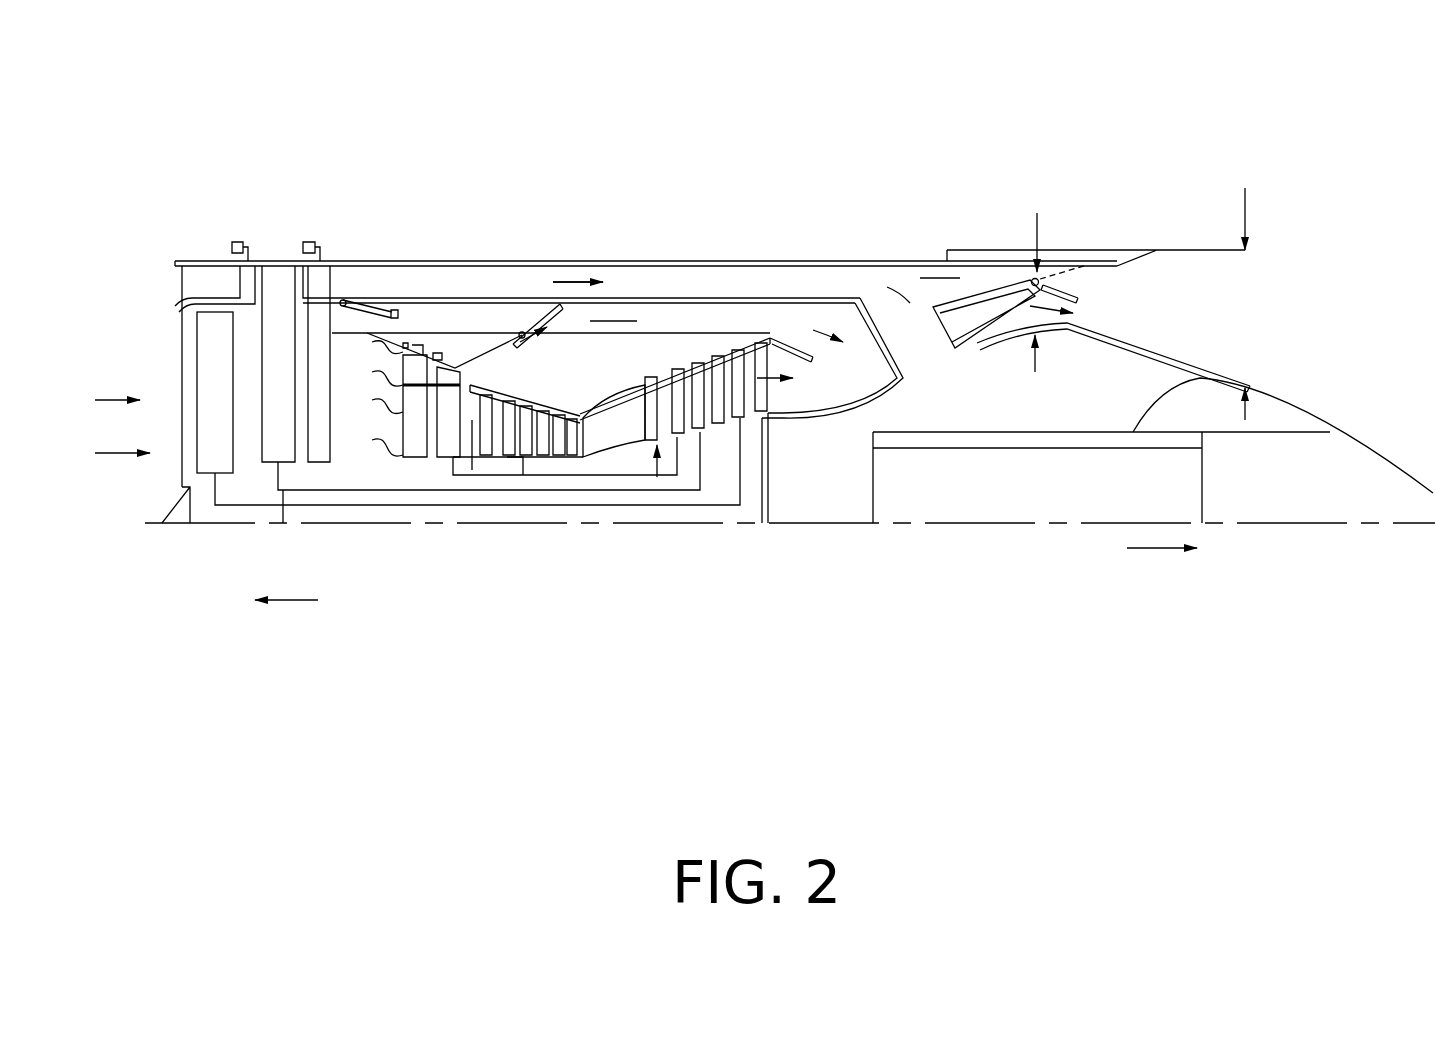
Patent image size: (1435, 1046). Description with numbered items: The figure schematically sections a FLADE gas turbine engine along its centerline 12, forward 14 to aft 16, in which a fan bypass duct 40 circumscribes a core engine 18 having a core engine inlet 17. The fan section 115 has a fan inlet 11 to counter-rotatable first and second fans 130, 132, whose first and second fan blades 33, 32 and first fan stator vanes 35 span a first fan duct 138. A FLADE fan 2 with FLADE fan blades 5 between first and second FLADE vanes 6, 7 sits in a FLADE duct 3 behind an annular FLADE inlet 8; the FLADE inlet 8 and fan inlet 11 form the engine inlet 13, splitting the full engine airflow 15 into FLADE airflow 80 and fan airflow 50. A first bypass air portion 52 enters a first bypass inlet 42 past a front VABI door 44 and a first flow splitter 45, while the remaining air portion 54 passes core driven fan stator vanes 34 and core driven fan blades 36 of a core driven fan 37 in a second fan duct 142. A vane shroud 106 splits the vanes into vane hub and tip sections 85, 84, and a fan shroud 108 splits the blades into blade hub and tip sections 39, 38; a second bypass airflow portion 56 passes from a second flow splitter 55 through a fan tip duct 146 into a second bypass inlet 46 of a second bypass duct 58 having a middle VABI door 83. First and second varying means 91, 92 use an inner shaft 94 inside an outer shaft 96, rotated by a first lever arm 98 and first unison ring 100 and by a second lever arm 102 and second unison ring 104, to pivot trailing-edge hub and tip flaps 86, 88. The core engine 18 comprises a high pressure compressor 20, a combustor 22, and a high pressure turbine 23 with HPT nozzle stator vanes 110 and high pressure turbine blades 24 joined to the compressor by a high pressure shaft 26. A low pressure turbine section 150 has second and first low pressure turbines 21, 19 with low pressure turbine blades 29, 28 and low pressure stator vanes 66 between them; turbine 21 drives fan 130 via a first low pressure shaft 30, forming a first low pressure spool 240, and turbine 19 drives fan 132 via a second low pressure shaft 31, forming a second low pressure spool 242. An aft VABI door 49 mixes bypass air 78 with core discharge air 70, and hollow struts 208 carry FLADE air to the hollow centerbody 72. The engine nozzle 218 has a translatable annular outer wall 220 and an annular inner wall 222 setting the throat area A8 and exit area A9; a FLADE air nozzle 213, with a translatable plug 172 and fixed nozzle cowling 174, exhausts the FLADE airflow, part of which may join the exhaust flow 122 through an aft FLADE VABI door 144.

The outer casing plate 2 is at (282, 256).
The inlet duct wall 3 is at (545, 262).
The mount 5 is at (248, 283).
The channel wall 6 is at (238, 288).
The bracket 7 is at (275, 272).
The forward housing 8 is at (180, 272).
The inlet wall 11 is at (182, 390).
The core engine 12 is at (947, 527).
The bypass inlet 13 is at (170, 311).
The flow direction 14 is at (303, 603).
The inlet airflow 15 is at (100, 401).
The core airflow 16 is at (1140, 550).
The fan blades 17 is at (477, 470).
The combustion chamber arrow 18 is at (600, 396).
The inner casing 19 is at (697, 440).
The mid casing 20 is at (510, 458).
The aft wall 21 is at (768, 436).
The combustor 22 is at (625, 446).
The inner duct 23 is at (658, 482).
The outer frame 24 is at (736, 503).
The lower shaft 26 is at (456, 477).
The turbine casing 28 is at (700, 377).
The exit flap 29 is at (750, 340).
The base strut 30 is at (283, 525).
The lower frame 31 is at (303, 507).
The front base 32 is at (222, 524).
The fan module 33 is at (228, 456).
The frame member 34 is at (373, 507).
The fan wall 35 is at (320, 403).
The strut 36 is at (408, 487).
The support 37 is at (413, 460).
The upper duct 38 is at (494, 299).
The support 39 is at (420, 460).
The bypass duct 40 is at (654, 333).
The actuator rod 42 is at (412, 323).
The lever 44 is at (372, 302).
The linkage 45 is at (380, 322).
The compressor casing 46 is at (481, 389).
The exhaust nozzle 49 is at (785, 342).
The inlet airflow 50 is at (100, 455).
The actuator 52 is at (393, 322).
The stator 54 is at (340, 423).
The fan duct 55 is at (392, 418).
The vane arm 56 is at (523, 347).
The pivot link 58 is at (506, 362).
The inner casing 66 is at (740, 413).
The turbine blades 70 is at (757, 383).
The nozzle flap 72 is at (1082, 324).
The bypass passage 78 is at (613, 308).
The bypass flow 80 is at (565, 277).
The outer passage 83 is at (550, 270).
The valve body 84 is at (410, 387).
The valve port 85 is at (407, 453).
The valve port 86 is at (410, 467).
The valve line 88 is at (438, 350).
The valve inlet 91 is at (423, 330).
The valve line 92 is at (470, 350).
The valve line 94 is at (430, 345).
The sensor line 96 is at (323, 397).
The sensor line 98 is at (357, 345).
The flexible line 100 is at (410, 355).
The control line 102 is at (455, 345).
The control line 104 is at (462, 345).
The valve stem 106 is at (413, 434).
The shaft 108 is at (472, 420).
The inner shaft 110 is at (668, 470).
The engine 115 is at (205, 575).
The flap link 122 is at (1087, 298).
The inlet lip 130 is at (190, 503).
The fan strut 132 is at (270, 470).
The fan casing 138 is at (250, 337).
The control line 142 is at (360, 362).
The flap axis 144 is at (1082, 278).
The control line 146 is at (445, 345).
The turbine vane 150 is at (752, 380).
The aft cowl 172 is at (1313, 422).
The nozzle gap 174 is at (1177, 357).
The throat height 208 is at (988, 360).
The nozzle wall 213 is at (1223, 370).
The flap hinge 218 is at (975, 250).
The outer flap plate 220 is at (1073, 250).
The pivot flap 222 is at (983, 332).
The inner shaft 240 is at (645, 500).
The aft frame 242 is at (722, 507).
The axis A8 is at (1038, 230).
The axis A9 is at (1247, 190).